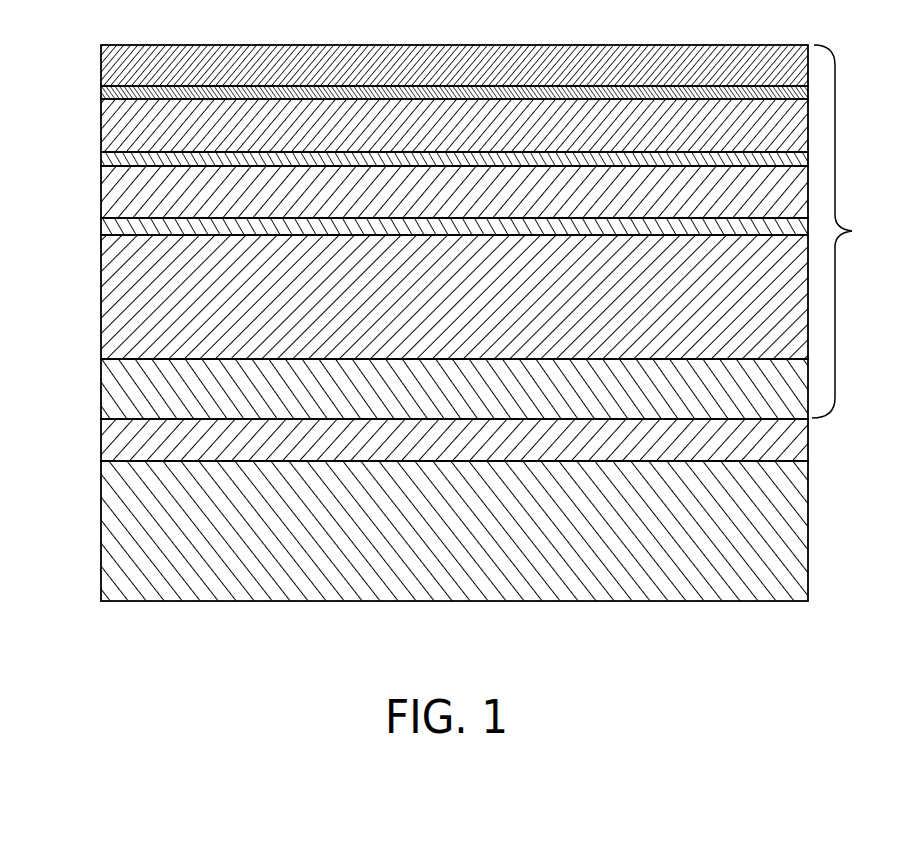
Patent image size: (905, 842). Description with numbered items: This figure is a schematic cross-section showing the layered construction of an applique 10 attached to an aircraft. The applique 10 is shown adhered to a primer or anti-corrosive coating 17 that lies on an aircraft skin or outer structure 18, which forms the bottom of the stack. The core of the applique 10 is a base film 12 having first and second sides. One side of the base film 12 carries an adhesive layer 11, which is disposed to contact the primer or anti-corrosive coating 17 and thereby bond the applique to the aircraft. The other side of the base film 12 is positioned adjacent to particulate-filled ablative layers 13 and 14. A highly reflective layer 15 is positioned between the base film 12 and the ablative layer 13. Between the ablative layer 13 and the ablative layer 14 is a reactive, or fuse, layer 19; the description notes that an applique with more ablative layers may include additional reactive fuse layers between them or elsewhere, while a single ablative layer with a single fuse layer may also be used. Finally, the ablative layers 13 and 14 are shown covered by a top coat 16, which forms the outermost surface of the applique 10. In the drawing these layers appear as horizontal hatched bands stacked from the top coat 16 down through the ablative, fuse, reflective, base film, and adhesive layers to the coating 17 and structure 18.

The applique 10 is at (847, 231).
The adhesive layer 11 is at (108, 385).
The base film 12 is at (108, 290).
The ablative layer 13 is at (108, 191).
The ablative layer 14 is at (108, 118).
The highly reflective layer 15 is at (107, 226).
The top coat 16 is at (107, 62).
The primer or anti-corrosive coating 17 is at (107, 437).
The aircraft skin or outer structure 18 is at (107, 533).
The reactive or fuse layer 19 is at (107, 156).